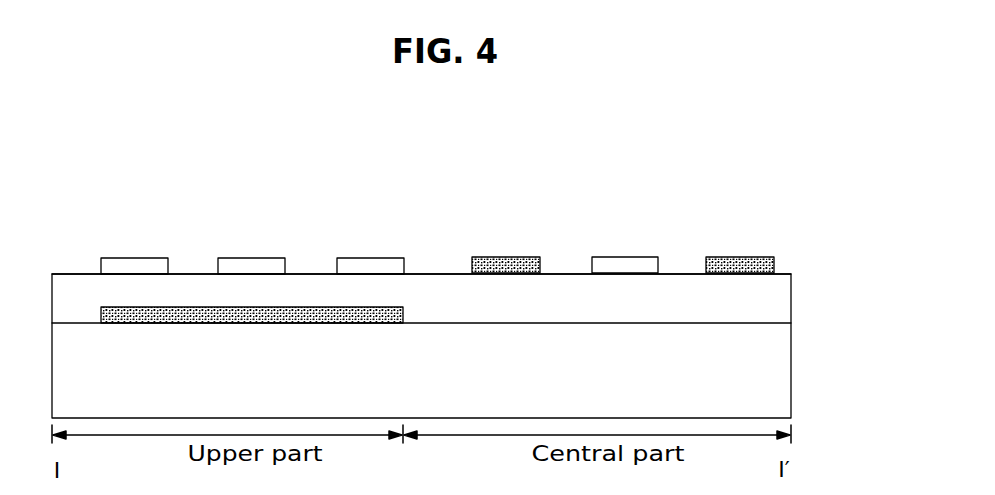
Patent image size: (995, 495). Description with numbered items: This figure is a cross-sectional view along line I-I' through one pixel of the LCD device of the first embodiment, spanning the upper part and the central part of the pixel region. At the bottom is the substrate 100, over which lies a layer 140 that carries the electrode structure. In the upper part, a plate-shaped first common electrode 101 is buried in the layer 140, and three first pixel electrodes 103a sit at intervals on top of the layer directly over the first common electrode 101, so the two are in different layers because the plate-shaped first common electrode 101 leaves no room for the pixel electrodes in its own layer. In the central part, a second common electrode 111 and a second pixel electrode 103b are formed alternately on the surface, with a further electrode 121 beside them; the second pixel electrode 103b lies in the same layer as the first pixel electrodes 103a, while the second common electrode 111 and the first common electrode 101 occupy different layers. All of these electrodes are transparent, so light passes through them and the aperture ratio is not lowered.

The substrate 100 is at (778, 381).
The insulating layer 140 is at (776, 301).
The first common electrode 101 is at (258, 323).
The first pixel electrode 103a is at (148, 262).
The second common electrode 111 is at (503, 260).
The second pixel electrode 103b is at (626, 265).
The second electrode pad 121 is at (741, 262).